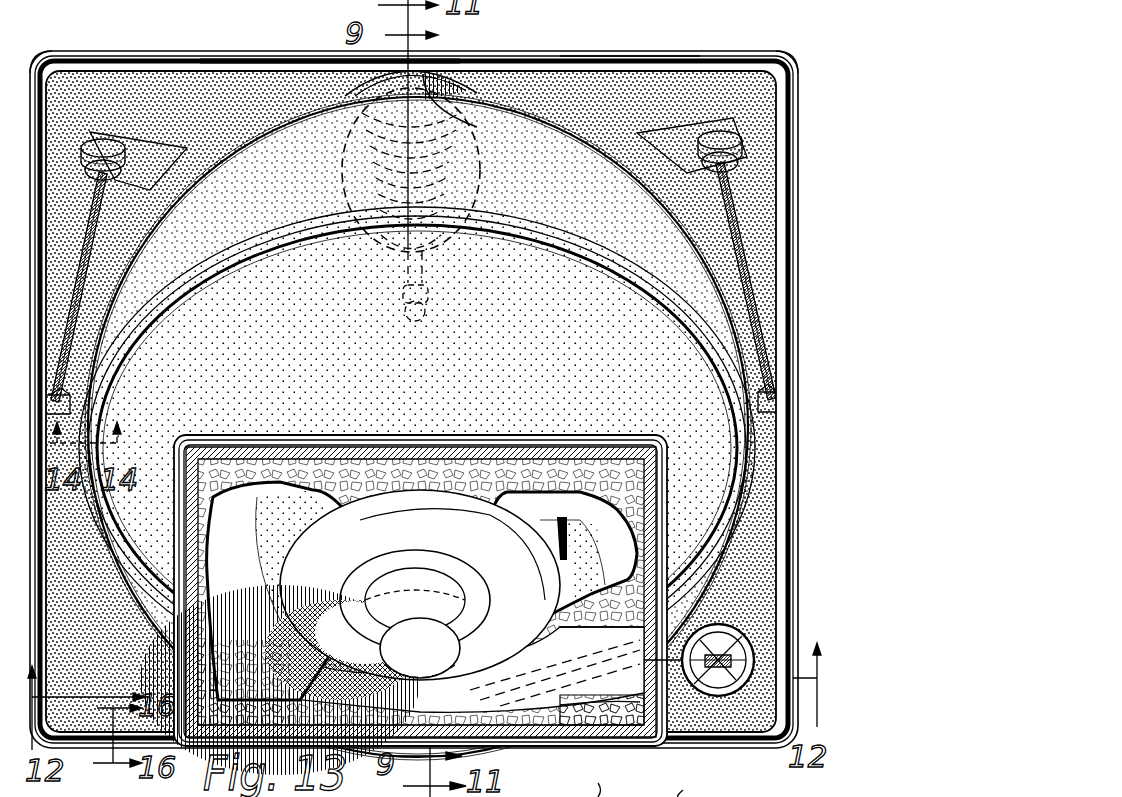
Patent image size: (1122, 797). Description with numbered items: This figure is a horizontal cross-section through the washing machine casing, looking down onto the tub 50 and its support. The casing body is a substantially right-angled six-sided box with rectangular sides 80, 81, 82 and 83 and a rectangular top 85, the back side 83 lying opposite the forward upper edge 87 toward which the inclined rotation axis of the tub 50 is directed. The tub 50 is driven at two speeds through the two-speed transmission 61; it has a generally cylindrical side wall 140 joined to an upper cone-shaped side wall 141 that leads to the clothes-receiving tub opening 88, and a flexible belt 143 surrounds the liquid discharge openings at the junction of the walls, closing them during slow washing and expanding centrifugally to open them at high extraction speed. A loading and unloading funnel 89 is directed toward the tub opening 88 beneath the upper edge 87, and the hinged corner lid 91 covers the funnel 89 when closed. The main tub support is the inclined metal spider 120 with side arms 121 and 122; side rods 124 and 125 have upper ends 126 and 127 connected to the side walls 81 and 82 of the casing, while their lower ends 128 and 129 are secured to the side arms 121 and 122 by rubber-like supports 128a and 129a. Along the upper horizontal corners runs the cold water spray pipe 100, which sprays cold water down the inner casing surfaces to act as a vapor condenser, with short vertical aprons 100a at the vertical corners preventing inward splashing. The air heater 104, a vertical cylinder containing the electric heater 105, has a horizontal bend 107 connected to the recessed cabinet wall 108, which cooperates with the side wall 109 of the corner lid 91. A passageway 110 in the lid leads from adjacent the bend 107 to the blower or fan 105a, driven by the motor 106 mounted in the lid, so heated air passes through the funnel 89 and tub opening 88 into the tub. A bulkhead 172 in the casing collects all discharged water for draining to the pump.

The tub 50 is at (218, 140).
The two-speed transmission 61 is at (470, 128).
The casing side 80 is at (30, 80).
The casing side 81 is at (800, 56).
The casing side 82 is at (705, 740).
The back side 83 is at (292, 48).
The rectangular top 85 is at (582, 788).
The forward upper edge 87 is at (693, 788).
The tub opening 88 is at (262, 572).
The loading and unloading funnel 89 is at (528, 600).
The corner lid 91 is at (628, 735).
The cold water spray pipe 100 is at (500, 58).
The vertical aprons 100a is at (683, 60).
The air heater 104 is at (730, 632).
The electric heater 105 is at (700, 668).
The blower or fan 105a is at (378, 590).
The motor 106 is at (430, 665).
The horizontal bend 107 is at (690, 620).
The recessed cabinet wall 108 is at (680, 730).
The side wall of corner lid 109 is at (652, 706).
The passageway 110 is at (605, 632).
The inclined metal spider 120 is at (650, 145).
The side arm 121 is at (685, 172).
The side arm 122 is at (155, 188).
The side rod 124 is at (745, 280).
The side rod 125 is at (88, 288).
The upper end of side rod 126 is at (760, 387).
The upper end of side rod 127 is at (70, 399).
The lower end of side rod 128 is at (712, 160).
The rubber-like support 128a is at (718, 135).
The lower end of side rod 129 is at (108, 166).
The rubber-like support 129a is at (108, 150).
The cylindrical side wall 140 is at (265, 135).
The upper cone-shaped side wall 141 is at (573, 278).
The flexible belt 143 is at (192, 280).
The bulkhead 172 is at (592, 75).